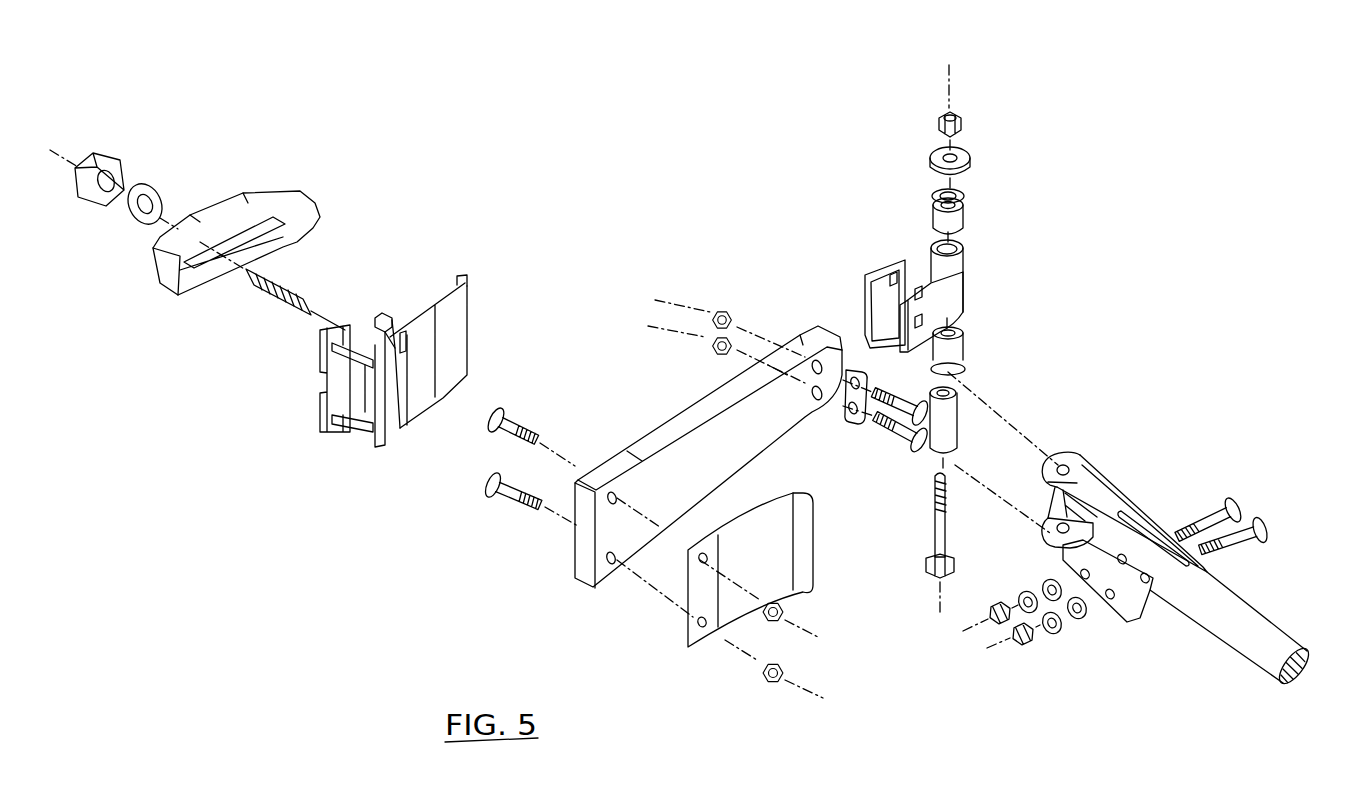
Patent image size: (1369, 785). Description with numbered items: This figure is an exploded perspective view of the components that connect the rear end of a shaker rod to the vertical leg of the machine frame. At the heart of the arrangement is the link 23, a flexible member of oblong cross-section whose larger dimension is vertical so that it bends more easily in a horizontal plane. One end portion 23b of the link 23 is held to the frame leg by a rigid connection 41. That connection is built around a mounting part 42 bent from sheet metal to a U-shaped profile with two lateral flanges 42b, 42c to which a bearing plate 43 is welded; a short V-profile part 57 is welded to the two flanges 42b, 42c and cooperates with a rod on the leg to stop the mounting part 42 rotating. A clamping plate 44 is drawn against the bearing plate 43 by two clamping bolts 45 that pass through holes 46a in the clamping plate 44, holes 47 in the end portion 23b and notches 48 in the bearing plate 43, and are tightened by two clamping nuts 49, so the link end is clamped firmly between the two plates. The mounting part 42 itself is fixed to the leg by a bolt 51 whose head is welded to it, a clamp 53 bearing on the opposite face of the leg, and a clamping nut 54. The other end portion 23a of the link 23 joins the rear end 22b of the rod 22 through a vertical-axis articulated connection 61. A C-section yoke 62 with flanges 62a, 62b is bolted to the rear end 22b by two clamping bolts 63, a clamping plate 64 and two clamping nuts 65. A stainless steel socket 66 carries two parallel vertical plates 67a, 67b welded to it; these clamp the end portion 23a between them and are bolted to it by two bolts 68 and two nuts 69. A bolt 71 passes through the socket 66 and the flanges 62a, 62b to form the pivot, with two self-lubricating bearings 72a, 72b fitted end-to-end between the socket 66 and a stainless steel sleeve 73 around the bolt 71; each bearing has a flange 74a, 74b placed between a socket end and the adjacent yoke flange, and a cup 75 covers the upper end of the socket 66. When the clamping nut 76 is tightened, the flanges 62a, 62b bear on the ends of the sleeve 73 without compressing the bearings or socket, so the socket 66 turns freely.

The rod 22 is at (1253, 626).
The rear end of rod 22b is at (1197, 600).
The link 23 is at (708, 464).
The end portion of link 23a is at (787, 340).
The end portion of link 23b is at (605, 580).
The rigid connection 41 is at (322, 489).
The mounting part 42 is at (410, 354).
The lateral flange 42b is at (428, 293).
The lateral flange 42c is at (370, 425).
The bearing plate 43 is at (455, 348).
The clamping plate 44 is at (760, 570).
The clamping bolts 45 is at (490, 470).
The hole in clamp plate 46a is at (678, 594).
The holes 47 is at (632, 527).
The notches 48 is at (406, 345).
The clamping nuts 49 is at (785, 672).
The bolt 51 is at (300, 322).
The clamp 53 is at (258, 198).
The clamping nut 54 is at (112, 162).
The V-profile part 57 is at (327, 397).
The articulated connection 61 is at (1033, 352).
The yoke 62 is at (1097, 491).
The flange of yoke 62a is at (1050, 543).
The flange of yoke 62b is at (1082, 460).
The clamping bolts 63 is at (1262, 529).
The clamping plate 64 is at (1127, 614).
The clamping nuts 65 is at (1020, 637).
The socket 66 is at (968, 268).
The vertical plate 67a is at (897, 262).
The vertical plate 67b is at (950, 298).
The bolts 68 is at (905, 440).
The nuts 69 is at (712, 322).
The bolt 71 is at (938, 539).
The anti-friction member 72a is at (955, 352).
The anti-friction member 72b is at (965, 220).
The sleeve 73 is at (953, 434).
The flange 74a is at (958, 370).
The flange 74b is at (935, 198).
The cup 75 is at (968, 160).
The clamping nut 76 is at (968, 122).